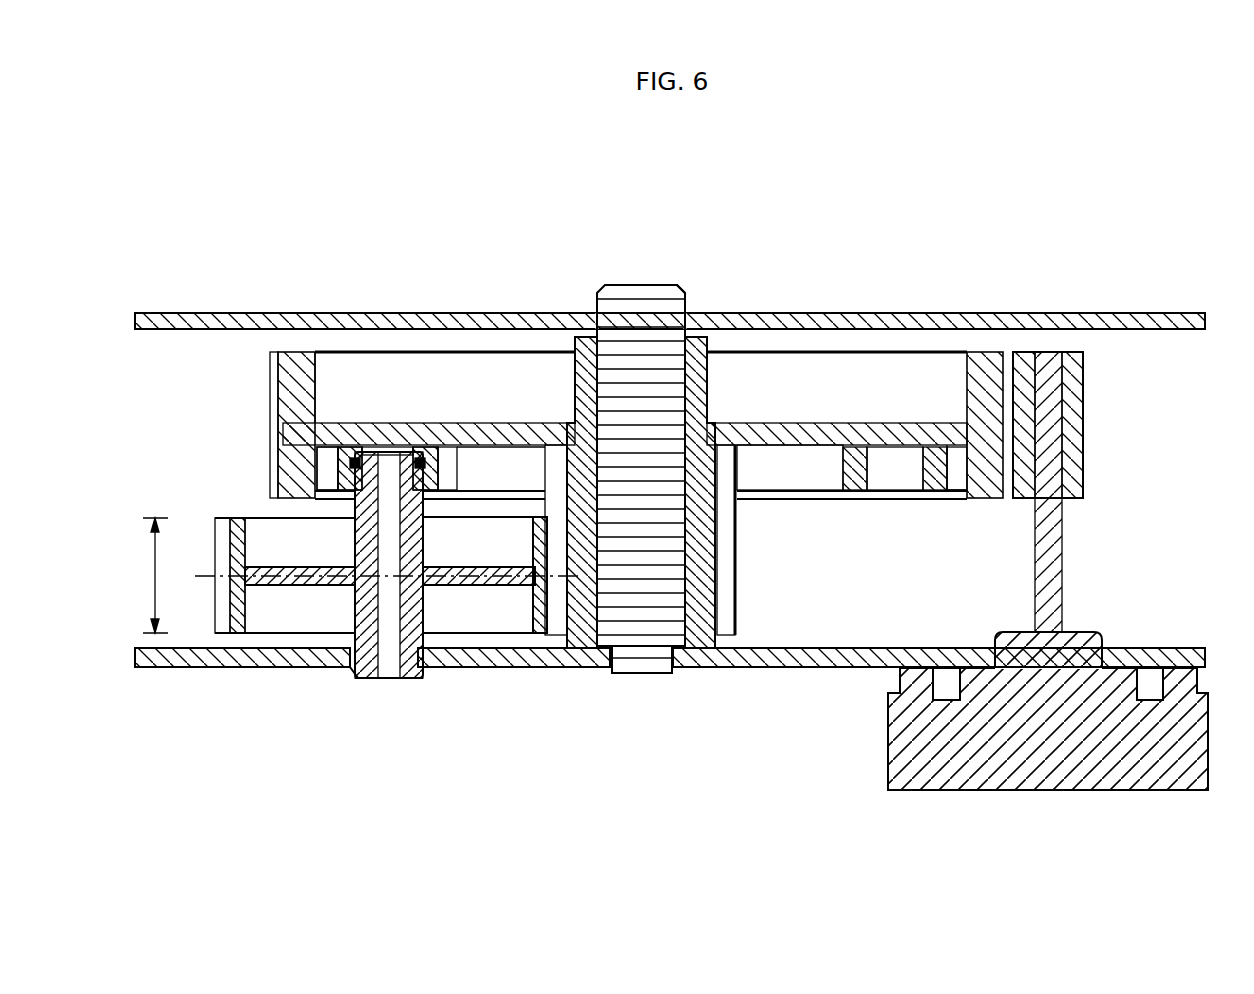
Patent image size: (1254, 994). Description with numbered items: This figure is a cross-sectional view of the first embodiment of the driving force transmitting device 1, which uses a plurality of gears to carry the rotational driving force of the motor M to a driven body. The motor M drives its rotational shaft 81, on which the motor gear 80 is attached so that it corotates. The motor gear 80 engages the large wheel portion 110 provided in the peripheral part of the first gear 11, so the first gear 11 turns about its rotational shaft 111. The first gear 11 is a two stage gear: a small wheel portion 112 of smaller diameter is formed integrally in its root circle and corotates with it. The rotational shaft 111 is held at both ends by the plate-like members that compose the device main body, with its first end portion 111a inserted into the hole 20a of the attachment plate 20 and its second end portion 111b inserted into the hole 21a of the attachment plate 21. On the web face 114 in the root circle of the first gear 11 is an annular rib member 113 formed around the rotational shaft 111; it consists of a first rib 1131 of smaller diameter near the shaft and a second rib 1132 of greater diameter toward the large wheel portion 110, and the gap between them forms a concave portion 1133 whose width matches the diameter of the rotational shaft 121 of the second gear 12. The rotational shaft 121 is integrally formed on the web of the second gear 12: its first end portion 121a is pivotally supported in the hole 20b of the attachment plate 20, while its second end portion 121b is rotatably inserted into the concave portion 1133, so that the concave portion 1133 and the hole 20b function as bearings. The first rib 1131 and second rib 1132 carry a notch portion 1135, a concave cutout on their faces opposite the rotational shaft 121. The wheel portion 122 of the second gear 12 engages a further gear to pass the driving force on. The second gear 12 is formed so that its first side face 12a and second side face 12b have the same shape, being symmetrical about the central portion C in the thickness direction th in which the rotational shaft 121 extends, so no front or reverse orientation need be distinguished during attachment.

The driving force transmitting device 1 is at (968, 186).
The first gear 11 is at (800, 352).
The second gear 12 is at (206, 517).
The first side face 12a is at (270, 617).
The second side face 12b is at (266, 535).
The attachment plate 20 is at (782, 668).
The hole 20a is at (683, 669).
The hole 20b is at (352, 669).
The attachment plate 21 is at (172, 313).
The hole 21a is at (597, 313).
The motor gear 80 is at (1086, 424).
The rotational shaft 81 is at (1064, 553).
The large wheel portion 110 is at (270, 372).
The rotational shaft 111 is at (642, 310).
The first end portion 111a is at (642, 670).
The second end portion 111b is at (680, 283).
The small wheel portion 112 is at (738, 551).
The rib member 113 is at (318, 481).
The web face 114 is at (510, 455).
The rotational shaft 121 is at (371, 680).
The first end portion 121a is at (411, 679).
The second end portion 121b is at (362, 450).
The wheel portion 122 is at (555, 620).
The first rib 1131 is at (490, 450).
The second rib 1132 is at (303, 450).
The concave portion 1133 is at (392, 452).
The notch portion 1135 is at (424, 458).
The motor M is at (1103, 634).
The thickness direction th is at (147, 575).
The central portion C is at (377, 576).